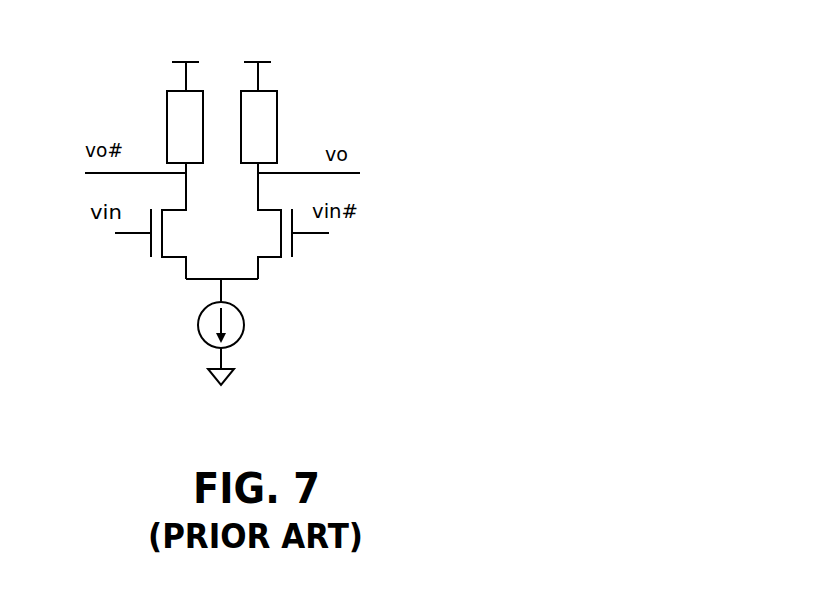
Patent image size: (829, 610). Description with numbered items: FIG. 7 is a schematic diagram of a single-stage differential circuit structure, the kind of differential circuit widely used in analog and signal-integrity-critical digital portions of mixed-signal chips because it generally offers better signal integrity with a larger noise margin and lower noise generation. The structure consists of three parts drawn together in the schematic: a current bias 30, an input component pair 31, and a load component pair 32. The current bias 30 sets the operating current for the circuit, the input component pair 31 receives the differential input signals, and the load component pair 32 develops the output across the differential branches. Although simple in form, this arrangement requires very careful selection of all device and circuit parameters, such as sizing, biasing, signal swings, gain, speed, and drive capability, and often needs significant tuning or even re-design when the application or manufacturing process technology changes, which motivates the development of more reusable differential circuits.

The current bias 30 is at (250, 316).
The input component pair 31 is at (392, 218).
The load component pair 32 is at (307, 80).